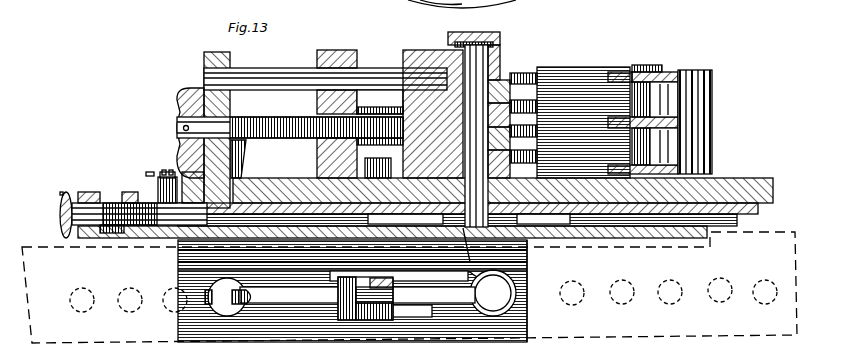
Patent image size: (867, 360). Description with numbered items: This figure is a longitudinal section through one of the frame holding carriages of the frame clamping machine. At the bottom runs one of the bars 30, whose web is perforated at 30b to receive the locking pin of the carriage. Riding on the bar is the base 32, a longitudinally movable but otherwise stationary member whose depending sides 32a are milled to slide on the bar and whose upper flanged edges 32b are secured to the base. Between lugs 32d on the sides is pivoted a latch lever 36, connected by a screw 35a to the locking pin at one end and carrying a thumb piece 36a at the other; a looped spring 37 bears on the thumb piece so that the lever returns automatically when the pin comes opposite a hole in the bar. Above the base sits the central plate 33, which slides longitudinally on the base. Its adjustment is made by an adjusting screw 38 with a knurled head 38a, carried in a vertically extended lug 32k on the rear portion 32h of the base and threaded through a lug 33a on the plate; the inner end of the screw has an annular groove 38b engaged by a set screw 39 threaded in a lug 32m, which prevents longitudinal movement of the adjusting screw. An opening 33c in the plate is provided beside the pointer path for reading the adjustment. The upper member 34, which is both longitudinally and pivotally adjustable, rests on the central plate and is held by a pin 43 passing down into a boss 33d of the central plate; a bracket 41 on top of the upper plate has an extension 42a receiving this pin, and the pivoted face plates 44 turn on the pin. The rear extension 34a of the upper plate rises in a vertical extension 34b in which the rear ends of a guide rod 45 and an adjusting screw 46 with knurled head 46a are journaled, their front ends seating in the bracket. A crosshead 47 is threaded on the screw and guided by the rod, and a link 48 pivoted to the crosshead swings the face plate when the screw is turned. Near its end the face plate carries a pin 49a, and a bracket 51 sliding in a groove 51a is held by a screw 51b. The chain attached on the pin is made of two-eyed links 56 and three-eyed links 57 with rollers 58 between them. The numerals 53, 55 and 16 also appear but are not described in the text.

The bars 30 is at (409, 287).
The perforations 30b is at (134, 306).
The bases 32 is at (178, 260).
The depending sides 32a is at (330, 318).
The upper flanged edges 32b is at (512, 240).
The lugs 32d is at (354, 318).
The rear portions 32h is at (105, 240).
The vertically extended lugs 32k is at (104, 176).
The vertically extended lugs 32m is at (148, 172).
The central plates 33 is at (648, 200).
The lugs 33a is at (126, 190).
The openings 33c is at (540, 220).
The bosses 33d is at (470, 262).
The upper members 34 is at (320, 160).
The rear extensions 34a is at (238, 175).
The vertical extensions 34b is at (206, 56).
The screws 35a is at (200, 284).
The latch levers 36 is at (318, 292).
The thumb pieces 36a is at (496, 308).
The springs 37 is at (424, 310).
The adjusting screws 38 is at (60, 212).
The knurled heads 38a is at (64, 195).
The annular grooves 38b is at (174, 200).
The set screws 39 is at (164, 170).
The brackets 41 is at (416, 56).
The extensions 42a is at (500, 52).
The pins 43 is at (500, 38).
The face plates 44 is at (545, 95).
The guide rods 45 is at (268, 72).
The adjusting screws 46 is at (272, 116).
The knurled heads 46a is at (178, 90).
The crossheads 47 is at (320, 100).
The links 48 is at (388, 108).
The pins 49a is at (648, 70).
The links 56 is at (712, 75).
The links 57 is at (622, 74).
The rollers 58 is at (700, 92).
The wheel 53 is at (456, 6).
The hub 55 is at (460, 3).
The frame 16 is at (580, 6).
The brackets 51 is at (668, 5).
The grooves 51a is at (606, 14).
The screws 51b is at (614, 15).